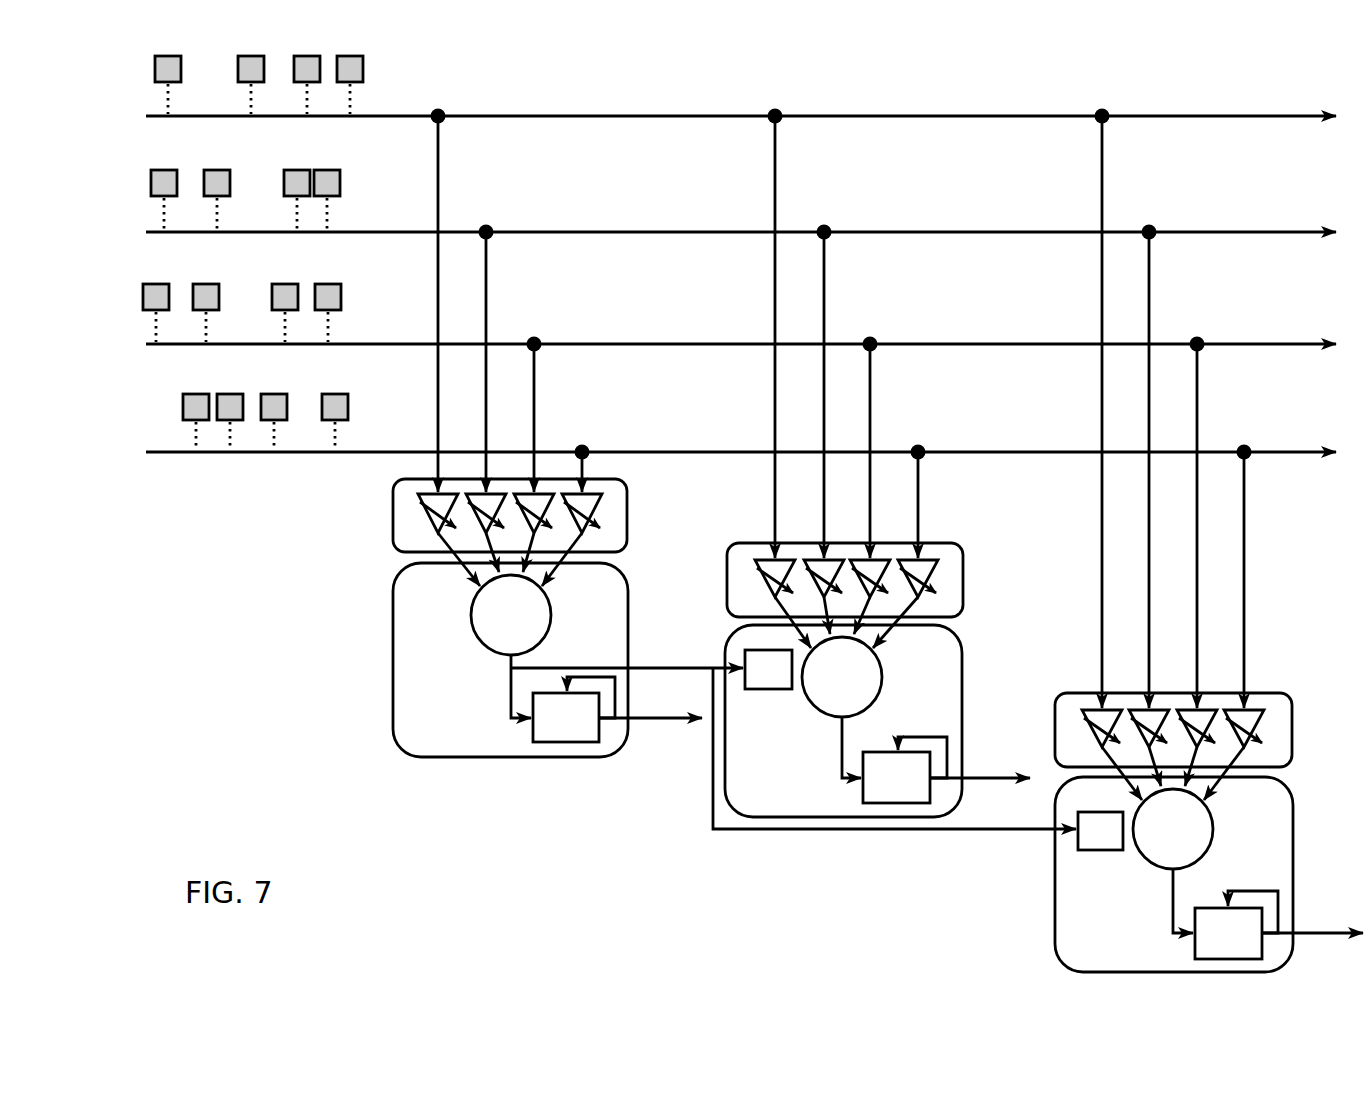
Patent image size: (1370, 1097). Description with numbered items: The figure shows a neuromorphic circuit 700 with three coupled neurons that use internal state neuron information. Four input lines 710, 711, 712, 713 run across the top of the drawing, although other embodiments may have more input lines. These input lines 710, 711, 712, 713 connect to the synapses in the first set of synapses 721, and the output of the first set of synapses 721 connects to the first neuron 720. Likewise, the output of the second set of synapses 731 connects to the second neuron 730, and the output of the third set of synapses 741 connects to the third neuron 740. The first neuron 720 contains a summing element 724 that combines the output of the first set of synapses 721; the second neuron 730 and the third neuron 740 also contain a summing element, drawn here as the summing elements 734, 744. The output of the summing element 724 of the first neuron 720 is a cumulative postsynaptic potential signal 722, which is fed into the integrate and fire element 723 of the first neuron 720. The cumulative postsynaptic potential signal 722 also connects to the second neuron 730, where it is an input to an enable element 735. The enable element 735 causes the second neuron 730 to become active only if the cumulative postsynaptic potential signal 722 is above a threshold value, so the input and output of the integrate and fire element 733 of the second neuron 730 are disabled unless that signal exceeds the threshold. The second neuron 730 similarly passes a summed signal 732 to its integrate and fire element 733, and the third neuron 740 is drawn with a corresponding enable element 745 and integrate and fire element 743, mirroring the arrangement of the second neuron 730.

The neuromorphic circuit 700 is at (217, 768).
The input line 710 is at (405, 110).
The input line 711 is at (380, 224).
The input line 712 is at (380, 337).
The input line 713 is at (380, 450).
The first neuron 720 is at (679, 681).
The first set of synapses 721 is at (390, 527).
The cumulative postsynaptic potential signal 722 is at (500, 670).
The integrate and fire element 723 is at (530, 737).
The summing element 724 is at (556, 634).
The second neuron 730 is at (842, 707).
The second set of synapses 731 is at (723, 588).
The second summation output line 732 is at (838, 758).
The integrate and fire element 733 is at (861, 797).
The second summation unit 734 is at (888, 686).
The enable element 735 is at (767, 691).
The third neuron 740 is at (1170, 859).
The third set of synapses 741 is at (1053, 717).
The third register 743 is at (1193, 948).
The third summation unit 744 is at (1216, 838).
The third input buffer 745 is at (1102, 853).